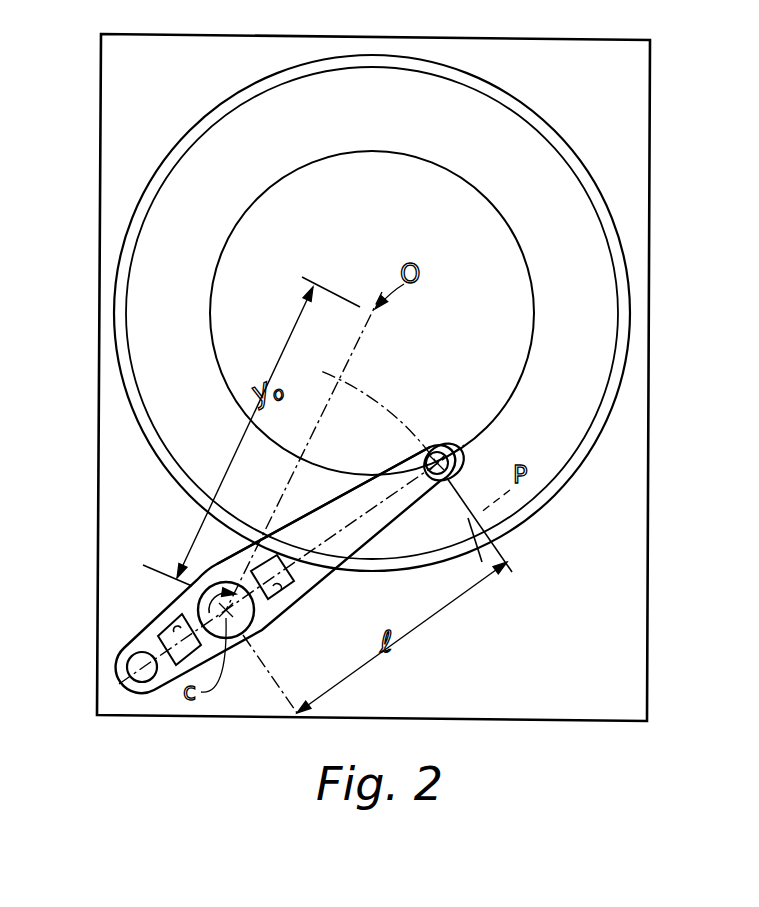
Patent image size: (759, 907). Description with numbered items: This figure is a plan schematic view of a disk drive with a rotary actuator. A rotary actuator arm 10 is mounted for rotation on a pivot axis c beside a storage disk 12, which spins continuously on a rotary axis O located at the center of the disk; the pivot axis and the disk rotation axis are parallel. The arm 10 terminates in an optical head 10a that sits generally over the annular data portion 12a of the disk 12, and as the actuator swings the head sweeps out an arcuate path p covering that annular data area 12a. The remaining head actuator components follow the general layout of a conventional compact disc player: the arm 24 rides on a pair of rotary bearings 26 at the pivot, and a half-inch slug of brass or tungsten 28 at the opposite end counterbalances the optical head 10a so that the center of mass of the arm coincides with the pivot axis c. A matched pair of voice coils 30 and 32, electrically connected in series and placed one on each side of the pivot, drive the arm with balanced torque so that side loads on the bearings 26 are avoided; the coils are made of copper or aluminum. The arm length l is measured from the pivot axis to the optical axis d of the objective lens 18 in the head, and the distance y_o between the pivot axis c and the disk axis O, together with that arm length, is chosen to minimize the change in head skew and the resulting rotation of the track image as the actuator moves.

The rotary actuator arm 10 is at (323, 592).
The optical head 10a is at (446, 446).
The storage disk 12 is at (474, 327).
The annular data portion 12a is at (529, 169).
The objective lens 18 is at (443, 482).
The arm 24 is at (315, 532).
The rotary bearings 26 is at (233, 623).
The slug of brass or tungsten 28 is at (122, 655).
The voice coil 30 is at (167, 618).
The voice coil 32 is at (281, 588).